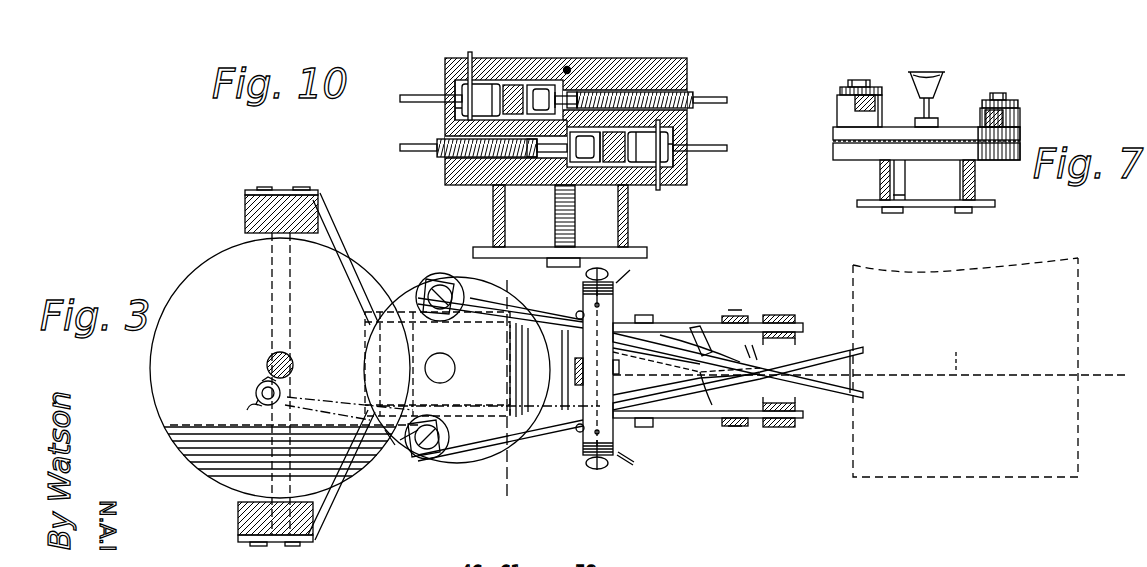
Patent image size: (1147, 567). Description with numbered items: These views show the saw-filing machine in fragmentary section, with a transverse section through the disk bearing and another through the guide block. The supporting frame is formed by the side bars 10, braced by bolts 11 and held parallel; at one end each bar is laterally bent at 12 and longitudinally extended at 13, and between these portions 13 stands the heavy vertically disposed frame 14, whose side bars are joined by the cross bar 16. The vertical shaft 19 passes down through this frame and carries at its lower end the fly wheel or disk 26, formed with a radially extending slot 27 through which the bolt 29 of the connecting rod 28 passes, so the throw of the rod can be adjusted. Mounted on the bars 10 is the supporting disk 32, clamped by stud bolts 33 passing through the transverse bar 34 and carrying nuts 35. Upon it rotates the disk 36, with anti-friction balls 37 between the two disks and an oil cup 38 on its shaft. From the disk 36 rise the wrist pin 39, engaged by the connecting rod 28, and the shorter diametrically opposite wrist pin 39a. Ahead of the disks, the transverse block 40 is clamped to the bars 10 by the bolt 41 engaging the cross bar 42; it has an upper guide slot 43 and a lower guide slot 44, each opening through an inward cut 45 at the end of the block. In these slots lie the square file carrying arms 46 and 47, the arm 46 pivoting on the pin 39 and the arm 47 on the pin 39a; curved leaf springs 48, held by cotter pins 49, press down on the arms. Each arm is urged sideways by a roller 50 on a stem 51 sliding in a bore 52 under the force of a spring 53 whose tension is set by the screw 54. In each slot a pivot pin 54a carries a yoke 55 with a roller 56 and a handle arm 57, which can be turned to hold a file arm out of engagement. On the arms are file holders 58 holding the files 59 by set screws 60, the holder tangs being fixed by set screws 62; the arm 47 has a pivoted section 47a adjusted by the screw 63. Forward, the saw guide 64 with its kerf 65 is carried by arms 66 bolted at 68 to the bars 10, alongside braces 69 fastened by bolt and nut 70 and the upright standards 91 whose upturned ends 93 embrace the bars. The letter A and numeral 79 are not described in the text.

In FIG. 10, the side bars 10 is at (489, 210).
In FIG. 7, the side bars 10 is at (874, 186).
In FIG. 3, the side bars 10 is at (693, 317).
In FIG. 3, the bolts 11 is at (380, 380).
In FIG. 3, the laterally bent portion 12 is at (330, 213).
In FIG. 3, the longitudinally extended portion 13 is at (318, 190).
In FIG. 3, the vertically disposed frame 14 is at (275, 530).
In FIG. 3, the cross bar 16 is at (272, 308).
In FIG. 3, the shaft 19 is at (292, 362).
In FIG. 3, the fly wheel or disk 26 is at (222, 476).
In FIG. 3, the radially extending slot 27 is at (255, 410).
In FIG. 7, the connecting rod 28 is at (840, 120).
In FIG. 3, the connecting rod 28 is at (402, 452).
In FIG. 3, the bolt 29 is at (282, 392).
In FIG. 7, the supporting disk 32 is at (1015, 160).
In FIG. 7, the stud bolts 33 is at (958, 190).
In FIG. 7, the transverse bar 34 is at (860, 207).
In FIG. 7, the nuts 35 is at (890, 213).
In FIG. 7, the disk 36 is at (952, 127).
In FIG. 3, the disk 36 is at (470, 450).
In FIG. 7, the anti-friction balls 37 is at (833, 141).
In FIG. 7, the oil cup 38 is at (938, 88).
In FIG. 7, the wrist pin 39 is at (865, 80).
In FIG. 3, the wrist pin 39 is at (435, 425).
In FIG. 7, the wrist pin 39a is at (1000, 93).
In FIG. 3, the wrist pin 39a is at (444, 284).
In FIG. 10, the block 40 is at (687, 178).
In FIG. 3, the block 40 is at (612, 390).
In FIG. 10, the bolt 41 is at (575, 232).
In FIG. 10, the cross bar 42 is at (647, 252).
In FIG. 10, the guide slot 43 is at (515, 84).
In FIG. 10, the guide slot 44 is at (690, 161).
In FIG. 10, the slot 45 is at (450, 108).
In FIG. 10, the file carrying arm 46 is at (540, 88).
In FIG. 3, the file carrying arm 46 is at (540, 432).
In FIG. 10, the file carrying arm 47 is at (688, 118).
In FIG. 3, the file carrying arm 47 is at (548, 308).
In FIG. 3, the arm section 47a is at (705, 328).
In FIG. 7, the curved leaf springs 48 is at (840, 90).
In FIG. 3, the curved leaf springs 48 is at (488, 298).
In FIG. 7, the cotter pins 49 is at (850, 80).
In FIG. 3, the cotter pins 49 is at (445, 320).
In FIG. 10, the roller 50 is at (565, 80).
In FIG. 10, the stem 51 is at (590, 108).
In FIG. 10, the bore 52 is at (620, 103).
In FIG. 10, the spring 53 is at (690, 95).
In FIG. 10, the screw 54 is at (720, 97).
In FIG. 3, the screw 54 is at (612, 280).
In FIG. 10, the pivot pin 54a is at (470, 52).
In FIG. 3, the pivot pin 54a is at (600, 303).
In FIG. 10, the yoke 55 is at (462, 107).
In FIG. 3, the yoke 55 is at (578, 311).
In FIG. 10, the roller 56 is at (565, 123).
In FIG. 3, the roller 56 is at (598, 368).
In FIG. 10, the arm 57 is at (420, 96).
In FIG. 3, the arm 57 is at (627, 280).
In FIG. 3, the file holder 58 is at (753, 346).
In FIG. 3, the file 59 is at (825, 360).
In FIG. 3, the set screw 60 is at (730, 388).
In FIG. 3, the set screw 62 is at (690, 370).
In FIG. 3, the bolt or screw 63 is at (670, 362).
In FIG. 3, the saw guide 64 is at (818, 392).
In FIG. 3, the kerf 65 is at (858, 362).
In FIG. 3, the arms 66 is at (700, 325).
In FIG. 3, the bolts 68 is at (650, 315).
In FIG. 3, the supporting arms or braces 69 is at (775, 315).
In FIG. 3, the bolt and nut 70 is at (740, 312).
In FIG. 3, the stop 79 is at (574, 360).
In FIG. 3, the upright standards 91 is at (797, 318).
In FIG. 3, the upwardly turned end 93 is at (782, 372).
In FIG. 3, the stock A is at (965, 367).